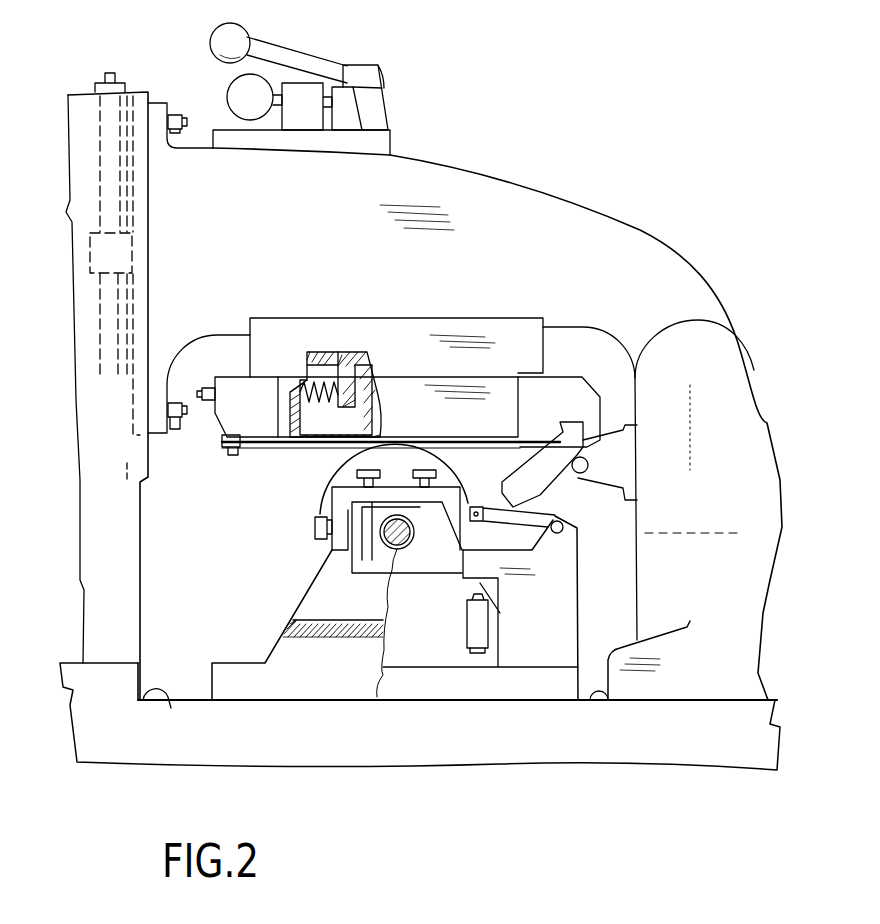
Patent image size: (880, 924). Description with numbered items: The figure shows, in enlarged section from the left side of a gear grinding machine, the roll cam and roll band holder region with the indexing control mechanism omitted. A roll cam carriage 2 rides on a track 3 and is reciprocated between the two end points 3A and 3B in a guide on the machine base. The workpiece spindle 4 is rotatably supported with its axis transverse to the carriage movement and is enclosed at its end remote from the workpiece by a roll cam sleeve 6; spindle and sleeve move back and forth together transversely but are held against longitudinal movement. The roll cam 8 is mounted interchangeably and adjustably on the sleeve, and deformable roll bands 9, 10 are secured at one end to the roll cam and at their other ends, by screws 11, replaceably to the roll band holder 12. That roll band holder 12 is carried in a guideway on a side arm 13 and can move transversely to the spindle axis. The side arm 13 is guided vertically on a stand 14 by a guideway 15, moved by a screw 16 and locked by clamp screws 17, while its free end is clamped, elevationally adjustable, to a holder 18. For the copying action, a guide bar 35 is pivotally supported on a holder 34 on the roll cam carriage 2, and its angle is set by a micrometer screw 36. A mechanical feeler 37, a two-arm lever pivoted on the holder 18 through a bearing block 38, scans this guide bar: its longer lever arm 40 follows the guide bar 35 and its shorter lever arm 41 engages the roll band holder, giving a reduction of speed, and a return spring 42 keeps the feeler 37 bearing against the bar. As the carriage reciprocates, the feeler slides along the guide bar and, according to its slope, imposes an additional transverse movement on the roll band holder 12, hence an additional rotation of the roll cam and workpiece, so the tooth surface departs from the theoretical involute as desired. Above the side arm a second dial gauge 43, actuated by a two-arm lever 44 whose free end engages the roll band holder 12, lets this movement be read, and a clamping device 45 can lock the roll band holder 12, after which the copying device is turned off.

The roll cam carriage 2 is at (250, 678).
The track 3 is at (193, 683).
The end point of carriage travel 3A is at (164, 715).
The end point of carriage travel 3B is at (588, 716).
The workpiece spindle 4 is at (400, 553).
The roll cam sleeve 6 is at (370, 558).
The roll cam 8 is at (331, 500).
The roll band 9 is at (258, 450).
The roll band 10 is at (505, 447).
The screws 11 is at (224, 452).
The roll band holder 12 is at (238, 380).
The side arm 13 is at (480, 178).
The stand 14 is at (98, 629).
The guideway 15 is at (137, 467).
The screw 16 is at (108, 126).
The clamp screws 17 is at (172, 114).
The holder 18 is at (675, 345).
The holder 34 is at (565, 628).
The guide bar 35 is at (495, 512).
The micrometer screw 36 is at (470, 630).
The mechanical feeler 37 is at (571, 480).
The bearing block 38 is at (630, 478).
The longer lever arm 40 is at (547, 484).
The shorter lever arm 41 is at (573, 440).
The return spring 42 is at (312, 383).
The second dial gauge 43 is at (256, 87).
The two-arm lever 44 is at (345, 120).
The clamping device 45 is at (357, 72).